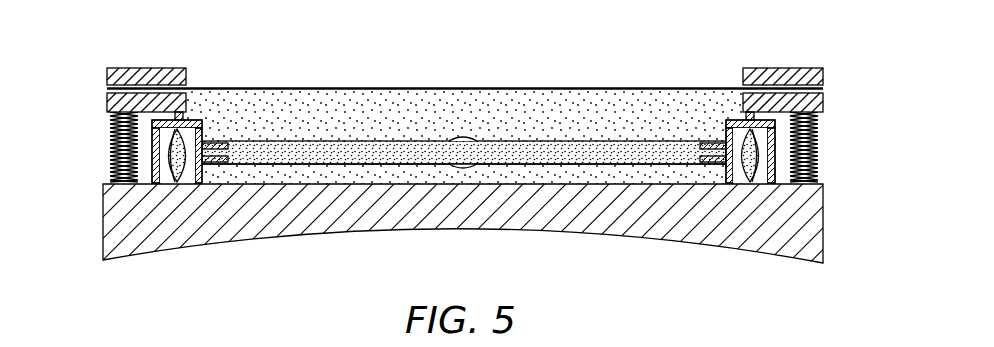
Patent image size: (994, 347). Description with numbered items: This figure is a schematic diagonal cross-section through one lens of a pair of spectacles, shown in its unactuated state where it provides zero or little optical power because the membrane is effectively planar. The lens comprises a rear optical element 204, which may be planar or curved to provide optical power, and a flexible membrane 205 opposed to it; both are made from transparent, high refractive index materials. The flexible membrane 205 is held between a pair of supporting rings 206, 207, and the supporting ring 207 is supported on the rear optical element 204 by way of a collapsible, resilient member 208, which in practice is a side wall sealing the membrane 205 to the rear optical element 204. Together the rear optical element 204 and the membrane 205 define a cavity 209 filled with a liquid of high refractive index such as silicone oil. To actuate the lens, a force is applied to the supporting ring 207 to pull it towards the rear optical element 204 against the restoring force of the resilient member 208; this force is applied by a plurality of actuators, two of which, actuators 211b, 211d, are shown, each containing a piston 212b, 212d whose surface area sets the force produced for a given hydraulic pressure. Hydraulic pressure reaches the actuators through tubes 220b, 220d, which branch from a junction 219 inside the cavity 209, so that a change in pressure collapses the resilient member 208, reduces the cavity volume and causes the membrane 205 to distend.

The rear optical element 204 is at (386, 229).
The flexible membrane 205 is at (375, 87).
The supporting ring 206 is at (150, 68).
The supporting ring 207 is at (107, 100).
The collapsible, resilient member 208 is at (110, 148).
The cavity 209 is at (553, 100).
The actuator 211b is at (752, 185).
The actuator 211d is at (175, 185).
The piston 212b is at (769, 185).
The piston 212d is at (165, 185).
The junction 219 is at (458, 166).
The tube 220b is at (605, 166).
The tube 220d is at (318, 166).